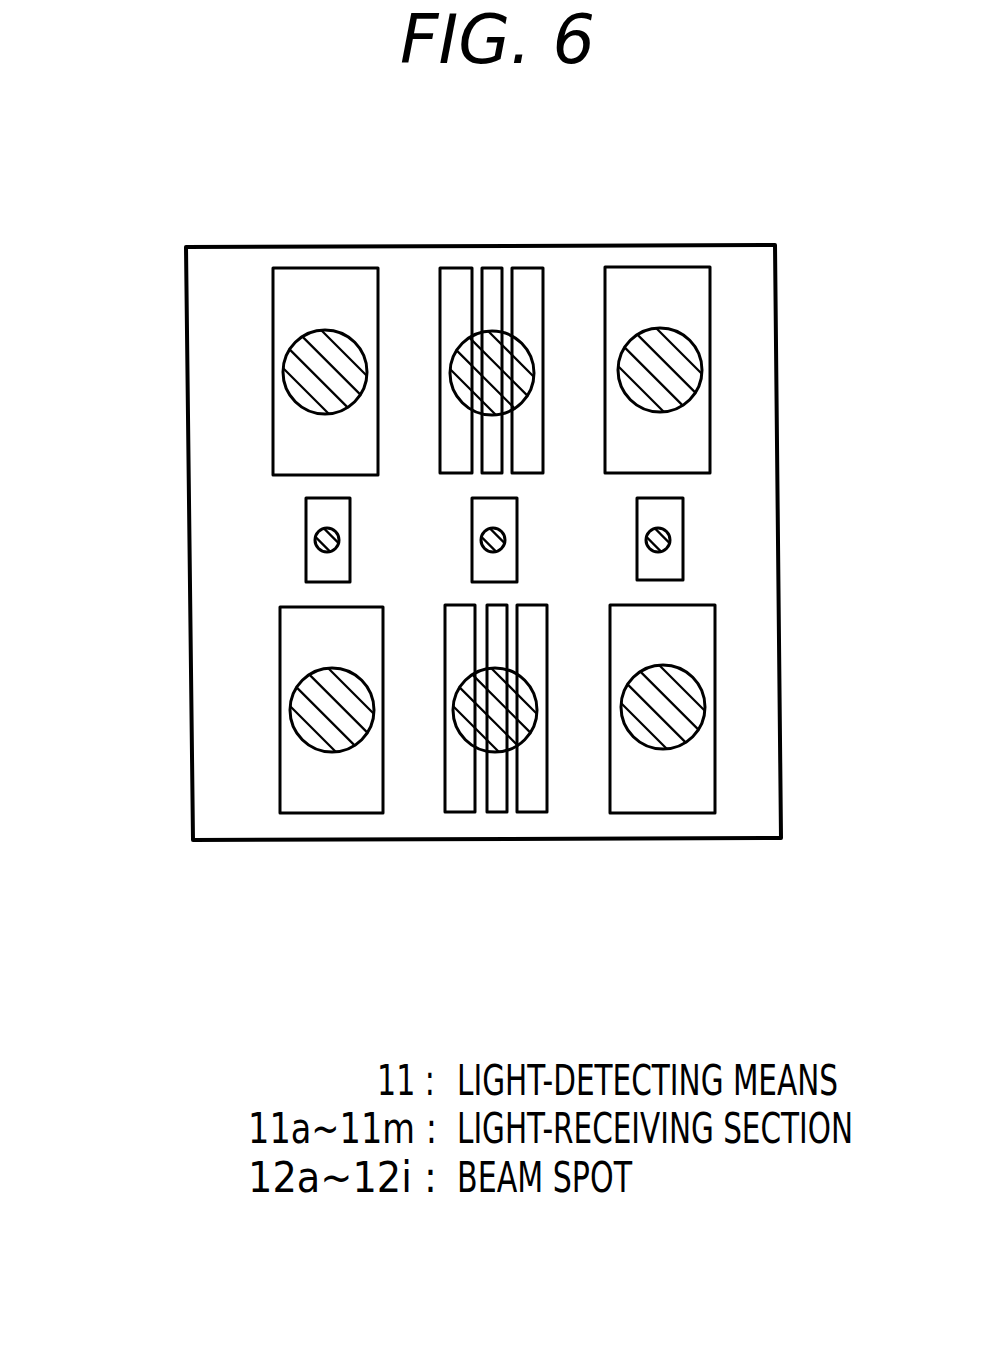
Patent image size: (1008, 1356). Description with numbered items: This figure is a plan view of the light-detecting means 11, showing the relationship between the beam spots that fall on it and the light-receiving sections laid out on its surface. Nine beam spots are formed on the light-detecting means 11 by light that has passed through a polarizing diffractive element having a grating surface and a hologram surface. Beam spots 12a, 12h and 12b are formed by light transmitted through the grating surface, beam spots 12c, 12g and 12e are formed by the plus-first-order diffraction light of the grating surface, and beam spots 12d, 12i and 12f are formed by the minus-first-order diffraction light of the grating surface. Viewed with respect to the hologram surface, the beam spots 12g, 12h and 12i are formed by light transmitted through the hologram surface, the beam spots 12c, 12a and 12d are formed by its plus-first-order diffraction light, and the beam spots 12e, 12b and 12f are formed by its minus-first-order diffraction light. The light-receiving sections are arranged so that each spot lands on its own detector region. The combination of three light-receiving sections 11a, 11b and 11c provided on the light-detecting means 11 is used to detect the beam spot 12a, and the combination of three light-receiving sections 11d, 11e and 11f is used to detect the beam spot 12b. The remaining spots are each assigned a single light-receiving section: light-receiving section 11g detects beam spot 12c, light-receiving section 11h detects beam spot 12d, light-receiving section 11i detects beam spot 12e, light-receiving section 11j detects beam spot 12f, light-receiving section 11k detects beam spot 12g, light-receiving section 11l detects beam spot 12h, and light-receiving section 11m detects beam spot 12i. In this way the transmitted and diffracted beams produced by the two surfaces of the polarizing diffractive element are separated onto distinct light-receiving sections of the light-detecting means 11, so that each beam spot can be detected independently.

The light-detecting means 11 is at (180, 240).
The light-receiving section 11a is at (465, 802).
The light-receiving section 11b is at (498, 803).
The light-receiving section 11c is at (538, 798).
The light-receiving section 11d is at (453, 287).
The light-receiving section 11e is at (492, 278).
The light-receiving section 11f is at (533, 277).
The light-receiving section 11g is at (283, 785).
The light-receiving section 11h is at (707, 762).
The light-receiving section 11i is at (278, 316).
The light-receiving section 11j is at (692, 287).
The light-receiving section 11k is at (307, 573).
The light-receiving section 11l is at (505, 509).
The light-receiving section 11m is at (673, 562).
The beam spot 12a is at (457, 720).
The beam spot 12b is at (531, 356).
The beam spot 12c is at (285, 708).
The beam spot 12d is at (660, 737).
The beam spot 12e is at (328, 342).
The beam spot 12f is at (683, 362).
The beam spot 12g is at (310, 542).
The beam spot 12h is at (503, 540).
The beam spot 12i is at (668, 530).